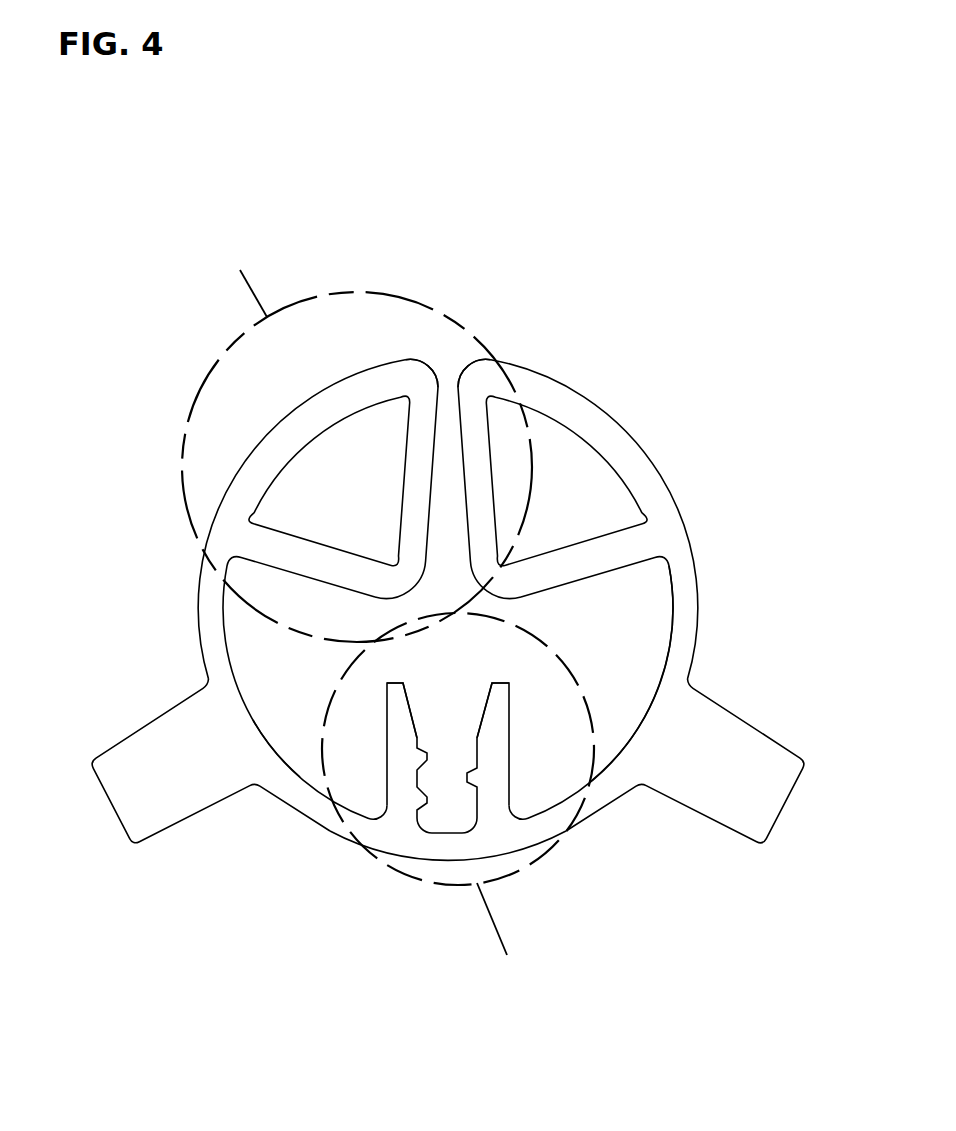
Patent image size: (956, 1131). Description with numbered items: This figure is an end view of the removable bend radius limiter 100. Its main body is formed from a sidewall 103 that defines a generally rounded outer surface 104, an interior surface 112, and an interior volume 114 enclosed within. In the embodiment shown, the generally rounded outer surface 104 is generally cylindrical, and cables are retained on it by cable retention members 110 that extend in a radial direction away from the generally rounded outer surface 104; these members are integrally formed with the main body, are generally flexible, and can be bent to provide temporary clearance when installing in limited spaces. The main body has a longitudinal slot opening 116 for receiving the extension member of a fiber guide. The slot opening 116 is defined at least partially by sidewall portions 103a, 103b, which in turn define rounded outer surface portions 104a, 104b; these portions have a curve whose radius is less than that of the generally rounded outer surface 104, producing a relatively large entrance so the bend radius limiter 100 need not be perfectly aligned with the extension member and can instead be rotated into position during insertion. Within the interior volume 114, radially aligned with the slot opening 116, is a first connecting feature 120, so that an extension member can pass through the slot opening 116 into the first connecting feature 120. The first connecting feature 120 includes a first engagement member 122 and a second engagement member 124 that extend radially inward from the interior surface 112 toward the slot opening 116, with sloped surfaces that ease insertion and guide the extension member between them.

The removable bend radius limiter 100 is at (100, 410).
The sidewall 103 is at (205, 625).
The sidewall portion 103a is at (535, 580).
The sidewall portion 103b is at (277, 558).
The generally rounded outer surface 104 is at (318, 830).
The rounded outer surface portion 104a is at (470, 372).
The rounded outer surface portion 104b is at (425, 368).
The cable retention member 110 is at (145, 805).
The interior surface 112 is at (272, 750).
The interior volume 114 is at (617, 668).
The longitudinal slot opening 116 is at (445, 400).
The first connecting feature 120 is at (513, 765).
The first engagement member 122 is at (394, 697).
The second engagement member 124 is at (500, 697).